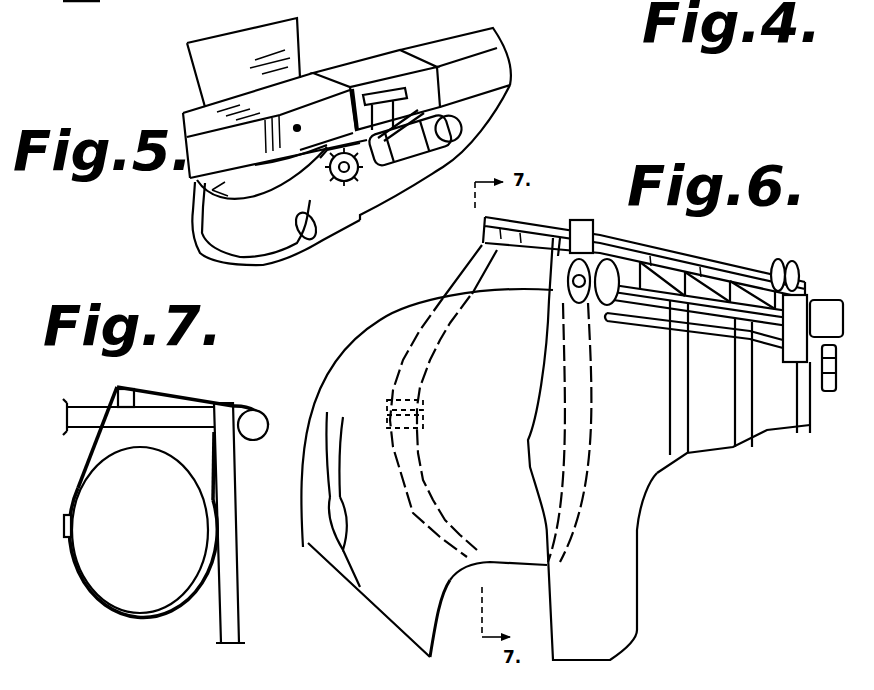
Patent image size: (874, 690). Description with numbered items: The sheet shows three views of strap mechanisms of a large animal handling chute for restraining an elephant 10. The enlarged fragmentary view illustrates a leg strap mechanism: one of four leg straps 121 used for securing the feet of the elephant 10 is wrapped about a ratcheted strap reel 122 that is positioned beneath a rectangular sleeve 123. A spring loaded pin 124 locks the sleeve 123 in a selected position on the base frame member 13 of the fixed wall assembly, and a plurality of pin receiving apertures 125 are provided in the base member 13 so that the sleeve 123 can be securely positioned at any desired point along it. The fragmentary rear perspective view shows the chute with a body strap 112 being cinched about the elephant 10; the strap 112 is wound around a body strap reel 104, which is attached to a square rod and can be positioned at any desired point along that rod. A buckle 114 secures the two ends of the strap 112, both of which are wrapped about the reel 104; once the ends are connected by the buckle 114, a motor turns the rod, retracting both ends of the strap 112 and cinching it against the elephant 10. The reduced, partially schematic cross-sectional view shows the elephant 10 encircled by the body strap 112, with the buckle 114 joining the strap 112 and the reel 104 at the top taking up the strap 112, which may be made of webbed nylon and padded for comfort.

In FIG. 6, the elephant 10 is at (325, 380).
In FIG. 7, the elephant 10 is at (144, 535).
In FIG. 5, the base frame member 13 is at (234, 158).
In FIG. 6, the body strap reel 104 is at (607, 305).
In FIG. 7, the body strap reel 104 is at (266, 440).
In FIG. 6, the body strap 112 is at (460, 280).
In FIG. 7, the body strap 112 is at (92, 446).
In FIG. 6, the buckle 114 is at (425, 406).
In FIG. 7, the buckle 114 is at (64, 528).
In FIG. 5, the leg strap 121 is at (197, 204).
In FIG. 5, the ratcheted strap reel 122 is at (358, 206).
In FIG. 5, the rectangular sleeve 123 is at (368, 66).
In FIG. 5, the spring loaded pin 124 is at (436, 112).
In FIG. 5, the pin receiving apertures 125 is at (479, 76).